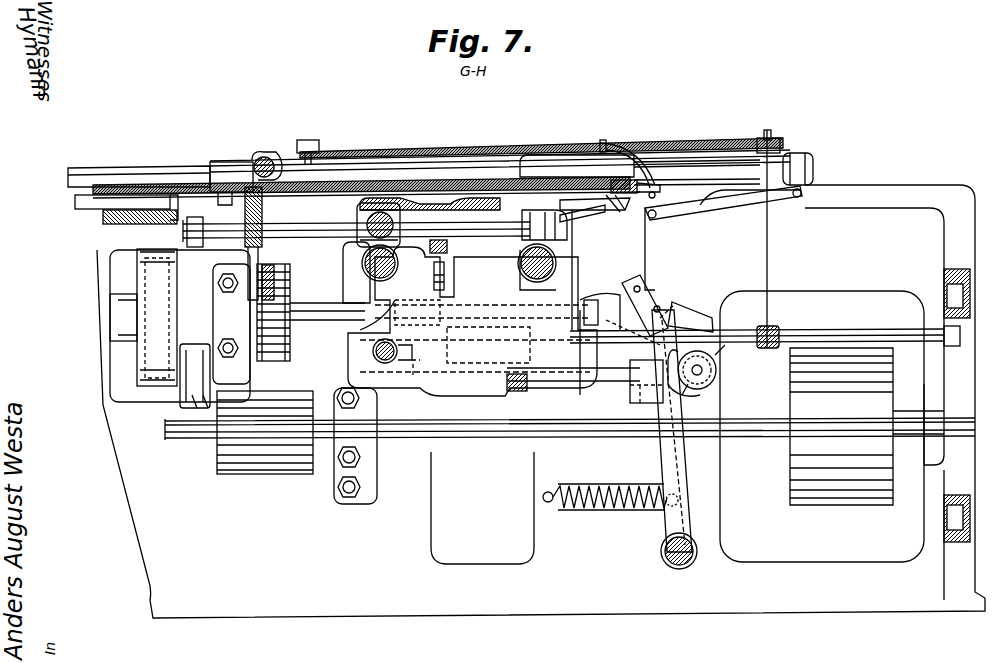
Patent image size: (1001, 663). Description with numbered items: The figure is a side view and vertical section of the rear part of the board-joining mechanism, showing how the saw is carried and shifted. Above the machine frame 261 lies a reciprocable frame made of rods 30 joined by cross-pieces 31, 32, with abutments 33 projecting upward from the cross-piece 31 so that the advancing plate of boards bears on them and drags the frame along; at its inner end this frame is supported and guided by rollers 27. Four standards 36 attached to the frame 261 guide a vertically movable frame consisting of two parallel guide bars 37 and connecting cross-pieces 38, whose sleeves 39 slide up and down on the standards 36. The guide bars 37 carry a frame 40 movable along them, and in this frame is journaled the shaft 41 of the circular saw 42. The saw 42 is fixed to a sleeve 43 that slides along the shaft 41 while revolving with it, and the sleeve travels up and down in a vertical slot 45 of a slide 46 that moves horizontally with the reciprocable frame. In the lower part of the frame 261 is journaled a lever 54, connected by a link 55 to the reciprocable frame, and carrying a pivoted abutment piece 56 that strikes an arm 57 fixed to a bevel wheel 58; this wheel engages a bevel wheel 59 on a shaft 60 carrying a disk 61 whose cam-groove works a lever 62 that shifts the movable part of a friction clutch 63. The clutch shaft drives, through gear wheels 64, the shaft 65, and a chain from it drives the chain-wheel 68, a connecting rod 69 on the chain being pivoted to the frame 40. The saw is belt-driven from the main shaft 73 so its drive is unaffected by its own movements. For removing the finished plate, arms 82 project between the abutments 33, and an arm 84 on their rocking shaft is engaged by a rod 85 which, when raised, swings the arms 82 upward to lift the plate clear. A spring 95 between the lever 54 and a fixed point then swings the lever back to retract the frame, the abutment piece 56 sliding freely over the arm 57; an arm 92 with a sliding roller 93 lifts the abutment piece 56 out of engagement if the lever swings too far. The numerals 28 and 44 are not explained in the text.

The machine frame 261 is at (852, 192).
The rollers 27 is at (132, 200).
The hatched bar 28 is at (445, 180).
The rods 30 is at (160, 168).
The cross-piece 31 is at (598, 212).
The cross-piece 32 is at (197, 185).
The abutments 33 is at (645, 190).
The standards 36 is at (348, 292).
The guide bars 37 is at (398, 268).
The cross-pieces 38 is at (508, 185).
The sleeves 39 is at (348, 254).
The frame 40 is at (400, 205).
The shaft 41 is at (300, 232).
The circular saw 42 is at (245, 162).
The sleeve 43 is at (262, 245).
The pivot post 44 is at (262, 246).
The vertical slot 45 is at (275, 268).
The slide 46 is at (280, 165).
The lever 54 is at (652, 455).
The link 55 is at (722, 203).
The abutment piece 56 is at (690, 315).
The arm 57 is at (720, 350).
The bevel wheel 58 is at (713, 388).
The bevel wheel 59 is at (695, 388).
The shaft 60 is at (630, 388).
The disk 61 is at (217, 450).
The lever 62 is at (183, 400).
The friction clutch 63 is at (137, 276).
The gear wheels 64 is at (290, 350).
The shaft 65 is at (333, 322).
The chain-wheel 68 is at (423, 348).
The connecting rod 69 is at (447, 270).
The main shaft 73 is at (580, 440).
The arms 82 is at (630, 214).
The arm 84 is at (640, 190).
The rod 85 is at (565, 150).
The arm 92 is at (650, 330).
The sliding roller 93 is at (712, 322).
The spring 95 is at (612, 512).